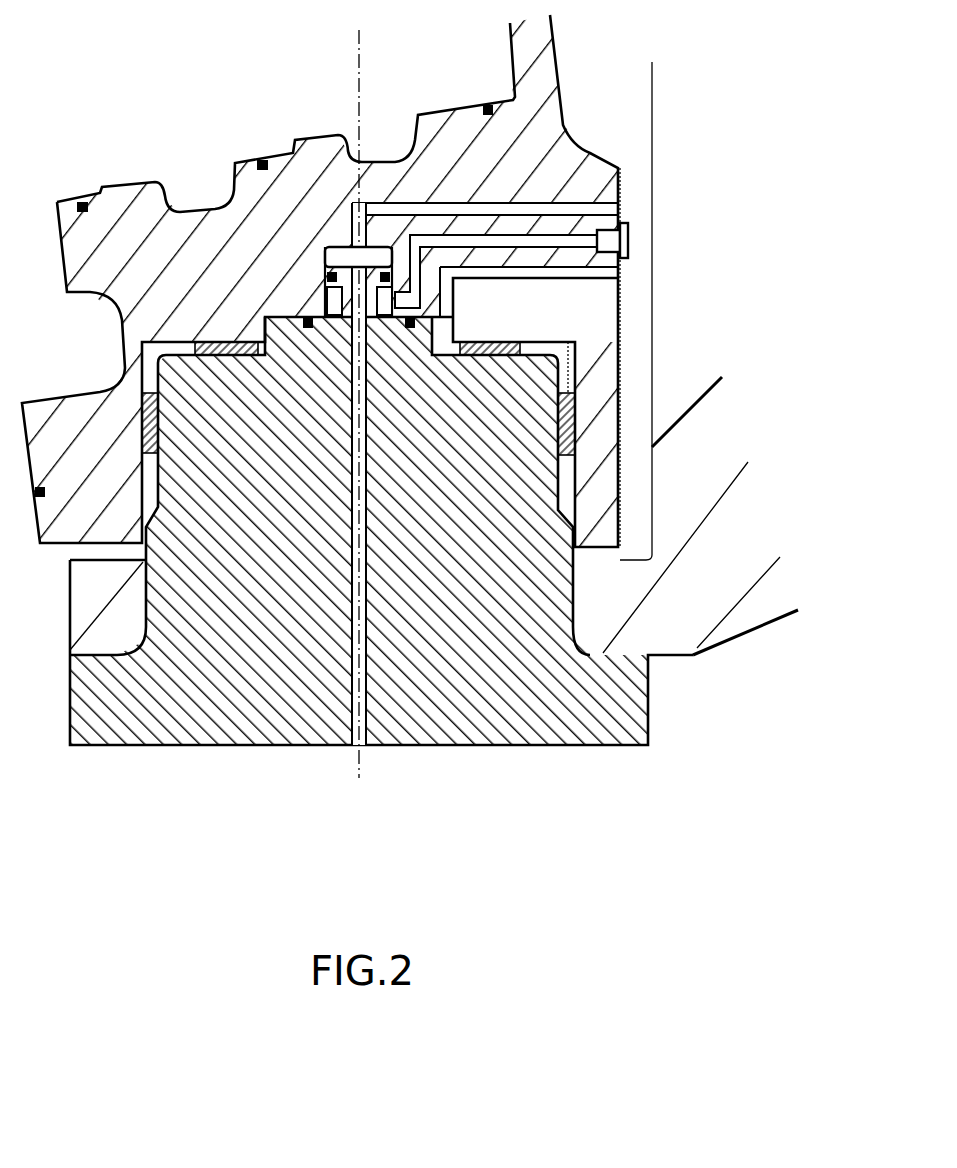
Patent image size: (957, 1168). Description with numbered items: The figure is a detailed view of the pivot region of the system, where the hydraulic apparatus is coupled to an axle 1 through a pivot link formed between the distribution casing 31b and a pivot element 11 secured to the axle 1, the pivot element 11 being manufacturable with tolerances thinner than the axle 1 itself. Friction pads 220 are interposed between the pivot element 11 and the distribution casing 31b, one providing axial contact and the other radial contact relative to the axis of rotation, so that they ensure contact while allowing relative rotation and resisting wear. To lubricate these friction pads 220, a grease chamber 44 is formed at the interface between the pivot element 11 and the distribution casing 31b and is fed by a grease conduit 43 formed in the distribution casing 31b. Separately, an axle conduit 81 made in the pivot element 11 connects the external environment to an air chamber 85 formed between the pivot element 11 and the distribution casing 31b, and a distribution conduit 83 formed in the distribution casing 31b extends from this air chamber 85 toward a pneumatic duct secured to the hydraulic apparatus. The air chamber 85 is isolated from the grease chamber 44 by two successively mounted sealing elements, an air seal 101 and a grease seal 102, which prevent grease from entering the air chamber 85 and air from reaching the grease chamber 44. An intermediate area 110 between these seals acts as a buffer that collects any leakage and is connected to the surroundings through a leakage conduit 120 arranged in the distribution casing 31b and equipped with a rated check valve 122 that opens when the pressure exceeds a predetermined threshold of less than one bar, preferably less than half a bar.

The axle 1 is at (697, 617).
The pivot element 11 is at (525, 745).
The distribution casing 31b is at (164, 228).
The grease conduit 43 is at (523, 275).
The grease chamber 44 is at (440, 348).
The axle conduit 81 is at (362, 737).
The distribution conduit 83 is at (495, 211).
The air chamber 85 is at (336, 250).
The air seal 101 is at (326, 263).
The grease seal 102 is at (304, 328).
The intermediate area 110 is at (383, 318).
The leakage conduit 120 is at (522, 240).
The rated check valve 122 is at (610, 243).
The friction pads 220 is at (231, 340).